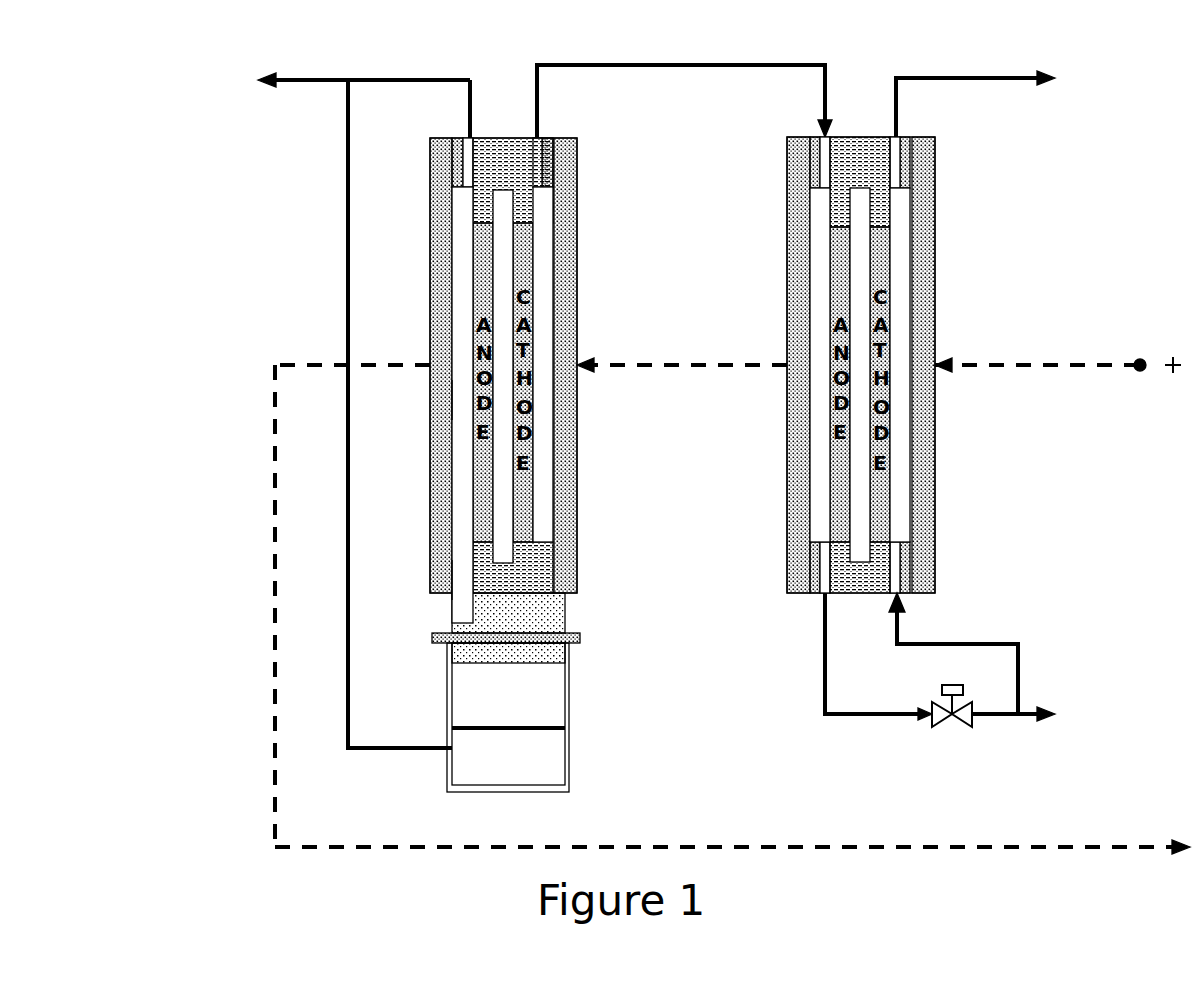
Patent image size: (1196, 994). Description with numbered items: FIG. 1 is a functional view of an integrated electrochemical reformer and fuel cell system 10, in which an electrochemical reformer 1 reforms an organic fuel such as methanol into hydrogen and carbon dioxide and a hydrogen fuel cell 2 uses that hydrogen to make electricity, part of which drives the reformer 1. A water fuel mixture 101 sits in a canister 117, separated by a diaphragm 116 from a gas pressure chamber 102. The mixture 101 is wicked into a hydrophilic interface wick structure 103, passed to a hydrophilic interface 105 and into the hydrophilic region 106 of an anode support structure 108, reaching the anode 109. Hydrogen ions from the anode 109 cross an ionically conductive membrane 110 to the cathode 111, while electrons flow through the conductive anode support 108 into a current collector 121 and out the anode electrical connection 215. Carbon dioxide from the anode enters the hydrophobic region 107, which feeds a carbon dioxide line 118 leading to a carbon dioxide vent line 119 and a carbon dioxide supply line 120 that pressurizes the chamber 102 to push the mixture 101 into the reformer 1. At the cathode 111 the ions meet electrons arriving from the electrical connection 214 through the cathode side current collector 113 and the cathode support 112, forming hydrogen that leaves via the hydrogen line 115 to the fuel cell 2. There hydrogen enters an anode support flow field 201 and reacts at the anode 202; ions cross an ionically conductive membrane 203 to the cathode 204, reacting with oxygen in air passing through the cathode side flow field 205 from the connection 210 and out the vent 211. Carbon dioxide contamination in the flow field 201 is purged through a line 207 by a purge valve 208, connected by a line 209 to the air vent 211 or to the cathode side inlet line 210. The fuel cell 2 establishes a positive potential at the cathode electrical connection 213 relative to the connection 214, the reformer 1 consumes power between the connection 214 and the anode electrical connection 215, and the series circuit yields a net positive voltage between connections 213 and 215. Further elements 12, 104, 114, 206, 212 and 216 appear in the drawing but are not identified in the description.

The electrochemical reformer 1 is at (598, 138).
The hydrogen fuel cell 2 is at (963, 148).
The integrated electrochemical reformer and fuel cell system 10 is at (237, 780).
The fuel container 12 is at (447, 728).
The water fuel mixture 101 is at (560, 675).
The gas pressure chamber 102 is at (570, 770).
The hydrophilic interface wick structure 103 is at (555, 655).
The separator plate 104 is at (440, 643).
The hydrophilic interface 105 is at (550, 615).
The hydrophilic region 106 is at (465, 480).
The hydrophobic region 107 is at (444, 205).
The anode support structure 108 is at (460, 390).
The anode 109 is at (478, 238).
The ionically conductive membrane 110 is at (500, 275).
The cathode 111 is at (528, 380).
The cathode support 112 is at (545, 425).
The cathode side current collector 113 is at (565, 500).
The reformer bottom seal 114 is at (520, 565).
The product hydrogen line 115 is at (625, 80).
The diaphragm 116 is at (447, 750).
The canister 117 is at (600, 738).
The carbon dioxide line 118 is at (470, 80).
The carbon dioxide vent line 119 is at (298, 85).
The carbon dioxide supply line 120 is at (347, 150).
The current collector 121 is at (440, 570).
The anode support flow field 201 is at (823, 258).
The anode 202 is at (838, 247).
The ionically conductive membrane 203 is at (860, 300).
The cathode 204 is at (905, 395).
The cathode side flow field 205 is at (905, 458).
The fuel cell housing wall 206 is at (920, 520).
The purge line 207 is at (825, 655).
The purge valve 208 is at (945, 725).
The line 209 is at (1005, 714).
The cathode side inlet line 210 is at (1020, 644).
The air vent 211 is at (1010, 80).
The fuel cell bottom seal 212 is at (900, 575).
The cathode electrical connection 213 is at (1078, 365).
The electrical connection 214 is at (660, 370).
The anode electrical connection 215 is at (1100, 847).
The fuel cell housing wall 216 is at (790, 455).